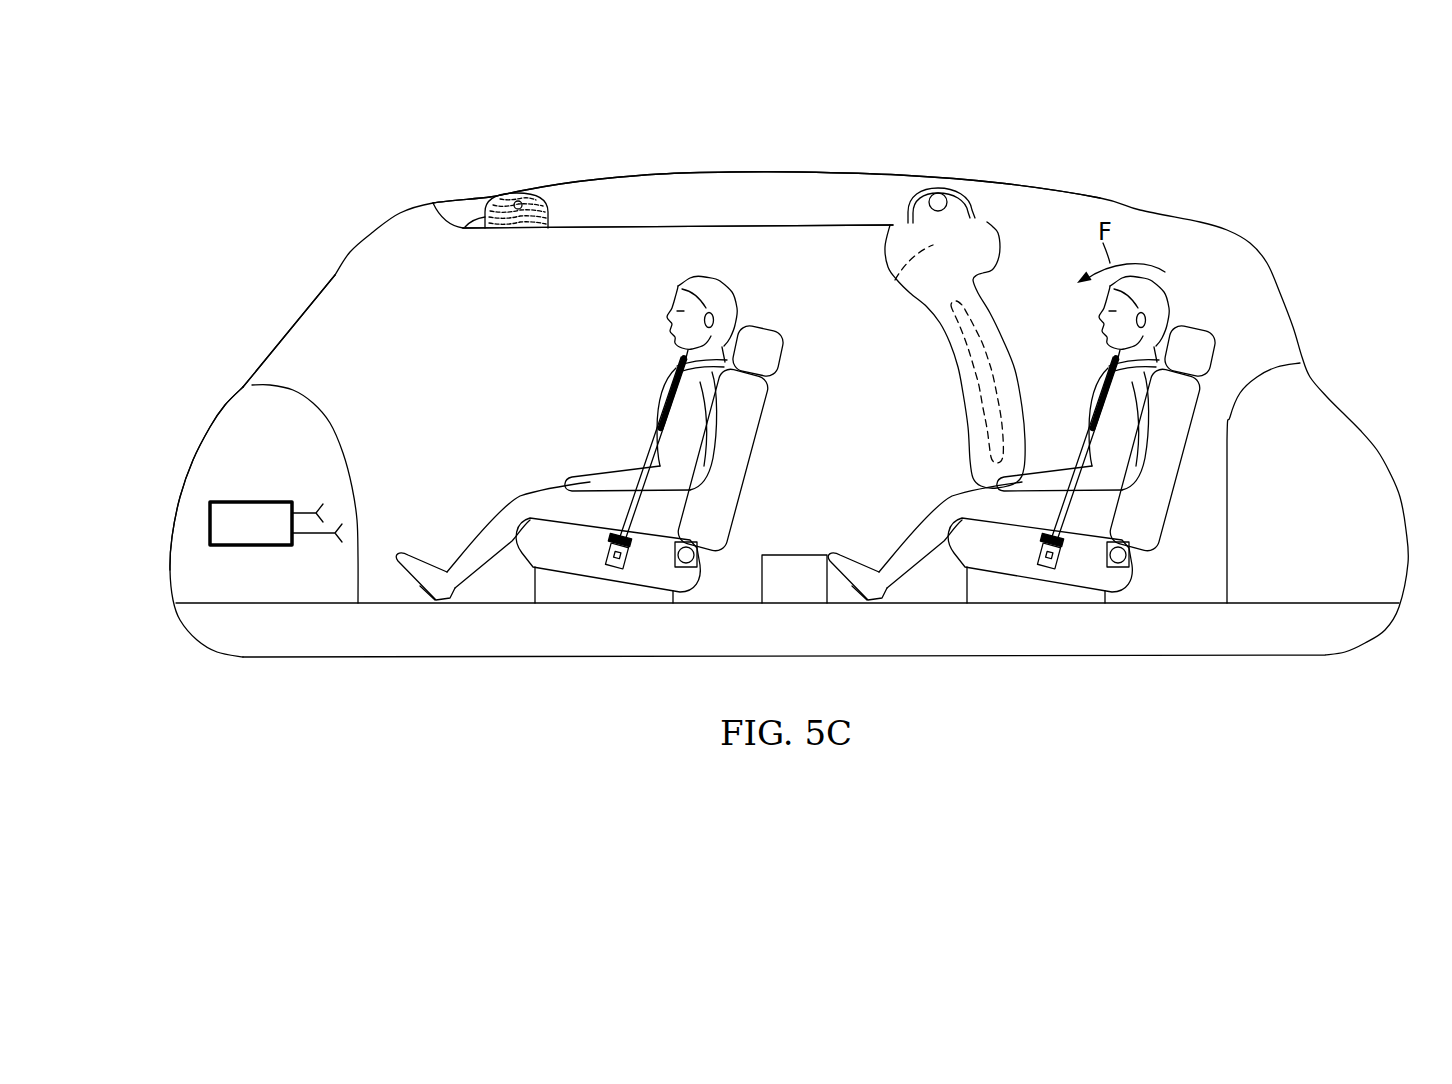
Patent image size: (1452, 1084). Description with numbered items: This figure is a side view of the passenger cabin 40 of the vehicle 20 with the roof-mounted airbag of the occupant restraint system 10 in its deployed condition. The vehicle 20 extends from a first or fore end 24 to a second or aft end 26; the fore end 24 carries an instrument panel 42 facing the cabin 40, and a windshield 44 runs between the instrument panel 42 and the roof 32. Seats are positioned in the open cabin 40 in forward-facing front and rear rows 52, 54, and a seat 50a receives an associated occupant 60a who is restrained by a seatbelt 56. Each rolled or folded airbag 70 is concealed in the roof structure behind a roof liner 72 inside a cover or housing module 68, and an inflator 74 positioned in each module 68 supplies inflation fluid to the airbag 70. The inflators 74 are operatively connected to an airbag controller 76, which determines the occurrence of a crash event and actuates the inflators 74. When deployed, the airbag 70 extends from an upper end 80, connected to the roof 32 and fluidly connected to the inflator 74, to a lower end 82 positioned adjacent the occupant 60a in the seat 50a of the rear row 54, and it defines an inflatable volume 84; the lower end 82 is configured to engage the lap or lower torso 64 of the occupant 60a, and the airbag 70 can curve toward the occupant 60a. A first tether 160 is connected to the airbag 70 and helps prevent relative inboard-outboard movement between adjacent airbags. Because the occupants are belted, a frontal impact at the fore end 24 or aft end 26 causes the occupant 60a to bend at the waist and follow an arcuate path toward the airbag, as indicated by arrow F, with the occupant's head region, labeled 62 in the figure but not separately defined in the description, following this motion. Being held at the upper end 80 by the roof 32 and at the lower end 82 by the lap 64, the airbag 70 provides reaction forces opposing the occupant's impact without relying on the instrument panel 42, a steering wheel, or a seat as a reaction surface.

The vehicle 20 is at (232, 190).
The occupant restraint system 10 is at (480, 189).
The inflator 74 is at (517, 203).
The roof 32 is at (740, 172).
The housing/module 68 is at (564, 213).
The upper end 80 is at (1012, 235).
The airbag 70 is at (463, 229).
The windshield 44 is at (313, 302).
The first or fore end 24 is at (222, 373).
The instrument panel 42 is at (340, 425).
The airbag controller 76 is at (250, 512).
The occupant head 62 is at (707, 285).
The roof liner 72 is at (780, 230).
The inflatable volume 84 is at (898, 283).
The passenger compartment or cabin 40 is at (678, 299).
The occupant 60a is at (678, 412).
The seatbelt 56 is at (648, 437).
The lap or lower torso 64 is at (527, 500).
The seat 50a is at (748, 437).
The first tether 160 is at (1007, 353).
The lower end 82 is at (955, 431).
The second or aft end 26 is at (1310, 289).
The front row 52 is at (600, 620).
The rear row 54 is at (1052, 620).